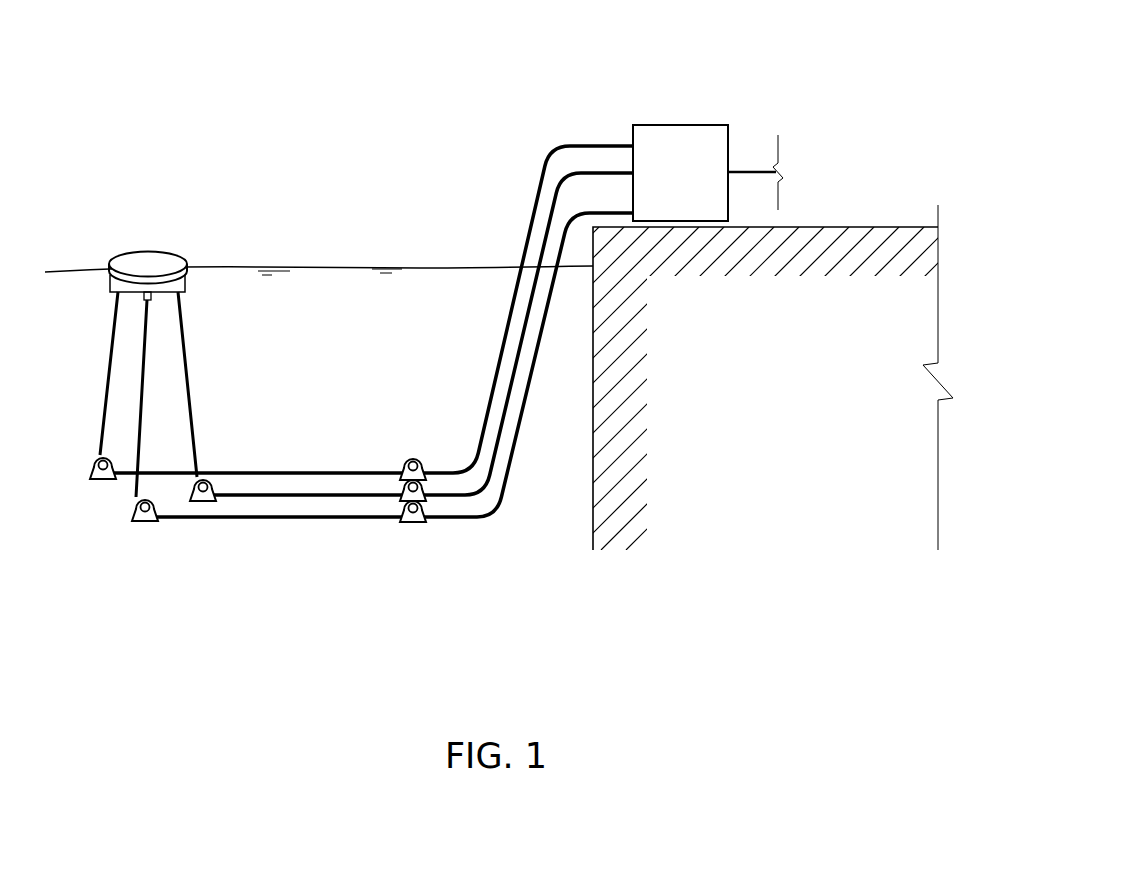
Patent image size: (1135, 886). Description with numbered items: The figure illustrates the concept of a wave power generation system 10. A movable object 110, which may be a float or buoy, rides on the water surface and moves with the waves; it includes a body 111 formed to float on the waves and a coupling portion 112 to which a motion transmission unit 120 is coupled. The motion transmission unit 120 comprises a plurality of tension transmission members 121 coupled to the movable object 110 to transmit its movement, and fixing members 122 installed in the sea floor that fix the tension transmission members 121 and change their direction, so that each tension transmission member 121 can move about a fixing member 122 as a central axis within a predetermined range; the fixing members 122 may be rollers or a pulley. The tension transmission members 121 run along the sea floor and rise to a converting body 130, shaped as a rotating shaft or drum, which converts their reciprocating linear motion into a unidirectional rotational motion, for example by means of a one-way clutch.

The wave power generation system 10 is at (509, 37).
The movable object 110 is at (129, 310).
The body 111 is at (148, 228).
The coupling portion 112 is at (108, 265).
The motion transmission unit 120 is at (361, 368).
The tension transmission member 121 is at (595, 143).
The fixing member 122 is at (258, 529).
The converting body 130 is at (680, 125).